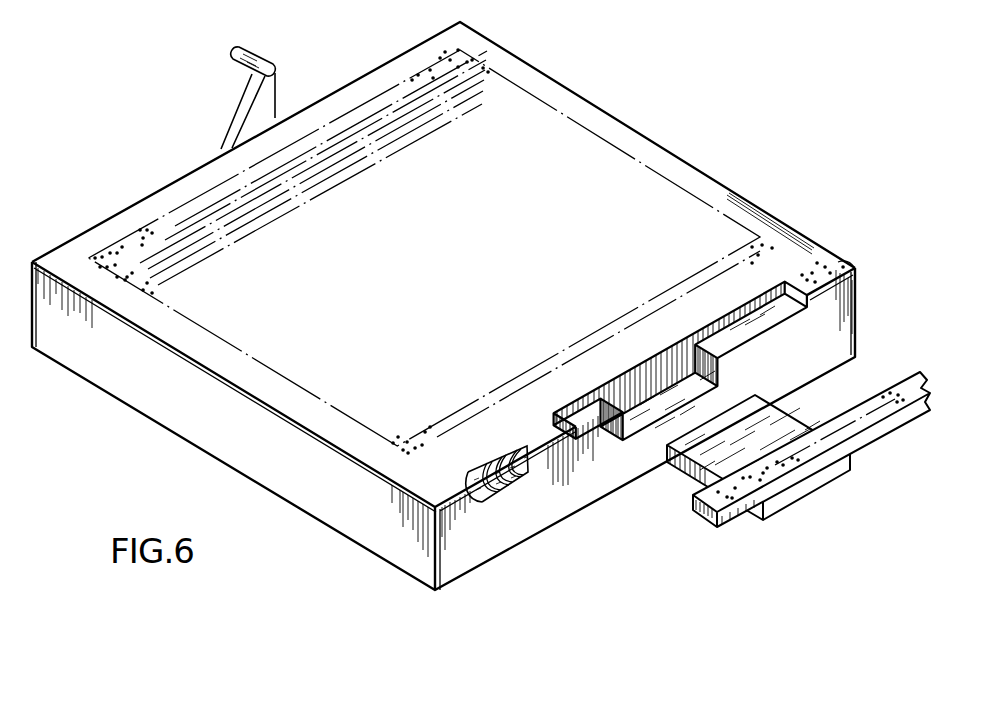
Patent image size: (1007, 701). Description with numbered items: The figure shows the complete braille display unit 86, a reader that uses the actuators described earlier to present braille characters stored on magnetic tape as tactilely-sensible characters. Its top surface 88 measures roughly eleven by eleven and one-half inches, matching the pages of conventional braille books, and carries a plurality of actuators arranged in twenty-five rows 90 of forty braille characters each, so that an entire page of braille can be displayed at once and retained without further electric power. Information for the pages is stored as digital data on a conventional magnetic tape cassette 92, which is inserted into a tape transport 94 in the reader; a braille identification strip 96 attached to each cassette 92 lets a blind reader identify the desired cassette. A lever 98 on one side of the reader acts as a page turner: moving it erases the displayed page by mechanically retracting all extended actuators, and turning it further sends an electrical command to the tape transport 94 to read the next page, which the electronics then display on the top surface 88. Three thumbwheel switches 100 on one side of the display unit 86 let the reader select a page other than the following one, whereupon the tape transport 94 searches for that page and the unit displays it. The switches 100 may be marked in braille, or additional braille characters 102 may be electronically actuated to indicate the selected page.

The braille display unit 86 is at (656, 141).
The top surface 88 is at (769, 221).
The rows 90 is at (478, 53).
The magnetic tape cassette 92 is at (784, 422).
The tape transport 94 is at (640, 399).
The braille identification strip 96 is at (871, 432).
The lever 98 is at (253, 100).
The thumbwheel switches 100 is at (497, 454).
The additional braille characters 102 is at (829, 261).